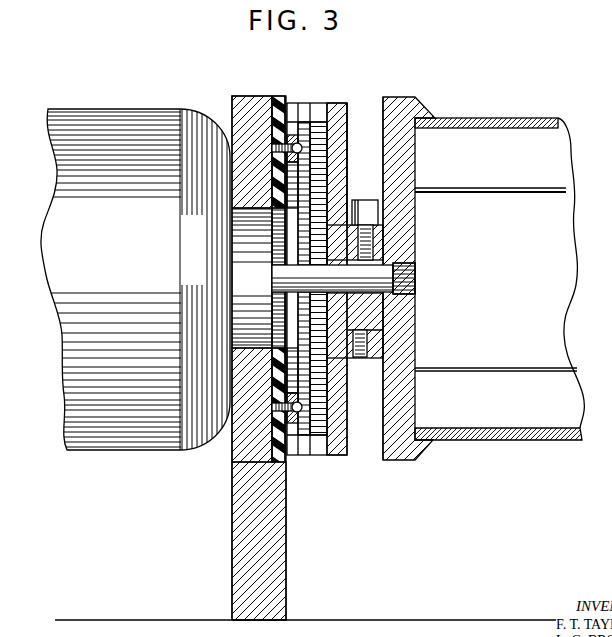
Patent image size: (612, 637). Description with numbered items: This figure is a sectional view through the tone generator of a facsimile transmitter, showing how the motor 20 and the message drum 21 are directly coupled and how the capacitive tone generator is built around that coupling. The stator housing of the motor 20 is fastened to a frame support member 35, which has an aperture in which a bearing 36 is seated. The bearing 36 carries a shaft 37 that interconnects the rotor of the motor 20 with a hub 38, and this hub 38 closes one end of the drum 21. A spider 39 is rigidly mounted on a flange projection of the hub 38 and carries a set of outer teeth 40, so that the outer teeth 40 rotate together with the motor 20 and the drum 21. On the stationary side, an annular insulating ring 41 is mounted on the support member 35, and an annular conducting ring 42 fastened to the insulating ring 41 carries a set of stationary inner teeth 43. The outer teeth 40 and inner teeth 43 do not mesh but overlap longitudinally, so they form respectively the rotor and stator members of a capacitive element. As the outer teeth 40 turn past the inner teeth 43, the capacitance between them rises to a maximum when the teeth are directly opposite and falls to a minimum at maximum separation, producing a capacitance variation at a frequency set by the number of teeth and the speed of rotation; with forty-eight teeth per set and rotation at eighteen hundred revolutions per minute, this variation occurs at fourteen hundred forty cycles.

The motor 20 is at (62, 387).
The message drum 21 is at (566, 198).
The frame support member 35 is at (280, 580).
The bearing 36 is at (232, 345).
The shaft 37 is at (393, 280).
The hub 38 is at (415, 97).
The spider 39 is at (347, 143).
The outer teeth 40 is at (320, 112).
The annular insulating ring 41 is at (278, 96).
The annular conducting ring 42 is at (287, 136).
The inner teeth 43 is at (297, 130).